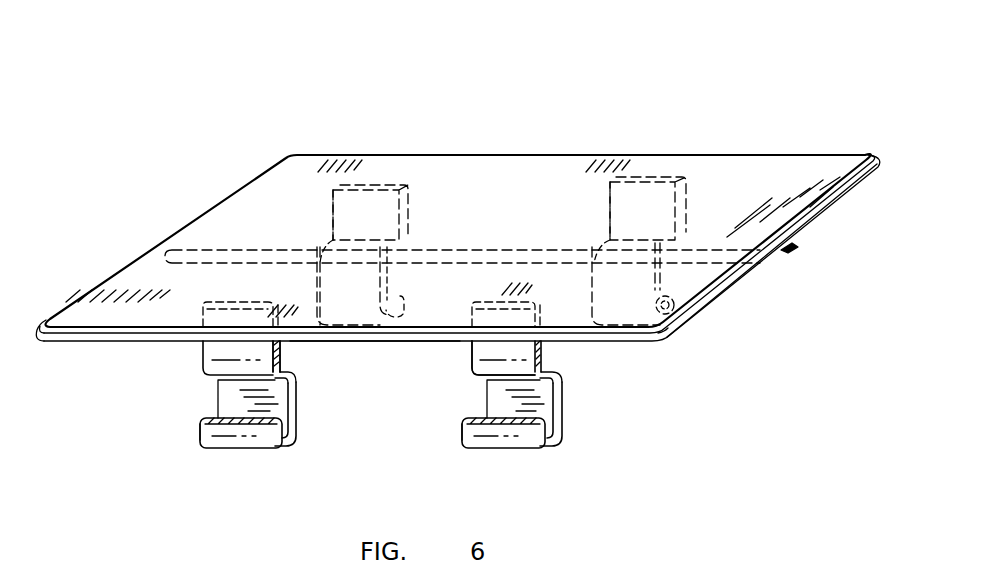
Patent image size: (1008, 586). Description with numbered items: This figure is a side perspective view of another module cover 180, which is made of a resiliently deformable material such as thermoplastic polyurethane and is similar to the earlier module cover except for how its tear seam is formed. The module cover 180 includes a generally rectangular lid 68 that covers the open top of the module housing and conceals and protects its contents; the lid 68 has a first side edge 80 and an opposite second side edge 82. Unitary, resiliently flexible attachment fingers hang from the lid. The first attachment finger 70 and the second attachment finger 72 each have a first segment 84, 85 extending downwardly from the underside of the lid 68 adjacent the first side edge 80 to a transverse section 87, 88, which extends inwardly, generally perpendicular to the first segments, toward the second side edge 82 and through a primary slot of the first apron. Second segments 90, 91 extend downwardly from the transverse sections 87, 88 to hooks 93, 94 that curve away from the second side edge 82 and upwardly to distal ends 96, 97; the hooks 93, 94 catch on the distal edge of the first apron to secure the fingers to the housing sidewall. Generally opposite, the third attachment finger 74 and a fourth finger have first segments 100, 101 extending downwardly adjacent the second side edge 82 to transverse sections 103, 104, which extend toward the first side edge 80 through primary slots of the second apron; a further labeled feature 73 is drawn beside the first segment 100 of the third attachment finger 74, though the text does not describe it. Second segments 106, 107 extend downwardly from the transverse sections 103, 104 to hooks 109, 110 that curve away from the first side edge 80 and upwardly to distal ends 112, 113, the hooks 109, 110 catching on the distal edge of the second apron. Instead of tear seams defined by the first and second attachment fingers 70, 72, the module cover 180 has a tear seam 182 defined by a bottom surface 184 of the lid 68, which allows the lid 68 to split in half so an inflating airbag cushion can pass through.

The module cover 180 is at (457, 255).
The lid 68 is at (457, 247).
The second side edge 82 is at (683, 155).
The first side edge 80 is at (108, 340).
The first attachment finger 70 is at (235, 397).
The second attachment finger 72 is at (531, 396).
The first opening 73 is at (332, 212).
The third attachment finger 74 is at (690, 203).
The first segment of first attachment finger 84 is at (283, 349).
The first segment of second attachment finger 85 is at (473, 356).
The transverse section of first attachment finger 87 is at (291, 372).
The transverse section of second attachment finger 88 is at (548, 370).
The second segment of first attachment finger 90 is at (297, 413).
The second segment of second attachment finger 91 is at (562, 390).
The hook of first attachment finger 93 is at (250, 448).
The hook of second attachment finger 94 is at (510, 450).
The distal end of first attachment finger 96 is at (210, 417).
The distal end of second attachment finger 97 is at (477, 418).
The first segment of third attachment finger 100 is at (412, 210).
The first segment of fourth attachment finger 101 is at (607, 197).
The transverse section of third attachment finger 103 is at (325, 244).
The transverse section of fourth attachment finger 104 is at (597, 245).
The second segment of third attachment finger 106 is at (313, 293).
The second segment of fourth attachment finger 107 is at (592, 290).
The hook of third attachment finger 109 is at (362, 345).
The hook of fourth attachment finger 110 is at (670, 340).
The distal end of third attachment finger 112 is at (392, 298).
The distal end of fourth attachment finger 113 is at (755, 290).
The tear seam 182 is at (790, 250).
The bottom surface of lid 184 is at (745, 302).